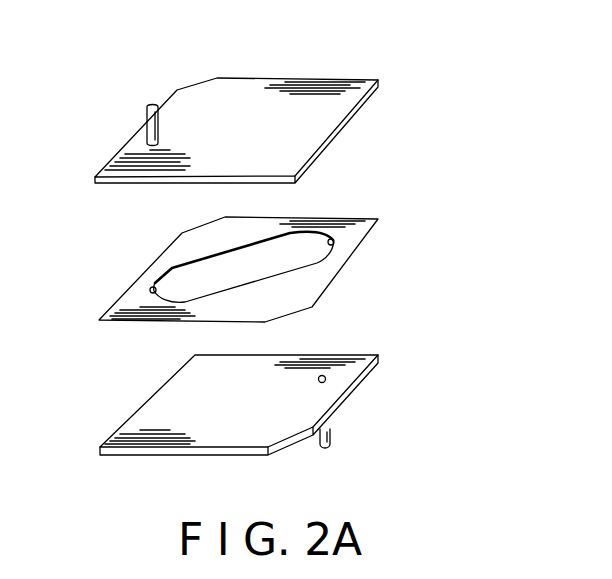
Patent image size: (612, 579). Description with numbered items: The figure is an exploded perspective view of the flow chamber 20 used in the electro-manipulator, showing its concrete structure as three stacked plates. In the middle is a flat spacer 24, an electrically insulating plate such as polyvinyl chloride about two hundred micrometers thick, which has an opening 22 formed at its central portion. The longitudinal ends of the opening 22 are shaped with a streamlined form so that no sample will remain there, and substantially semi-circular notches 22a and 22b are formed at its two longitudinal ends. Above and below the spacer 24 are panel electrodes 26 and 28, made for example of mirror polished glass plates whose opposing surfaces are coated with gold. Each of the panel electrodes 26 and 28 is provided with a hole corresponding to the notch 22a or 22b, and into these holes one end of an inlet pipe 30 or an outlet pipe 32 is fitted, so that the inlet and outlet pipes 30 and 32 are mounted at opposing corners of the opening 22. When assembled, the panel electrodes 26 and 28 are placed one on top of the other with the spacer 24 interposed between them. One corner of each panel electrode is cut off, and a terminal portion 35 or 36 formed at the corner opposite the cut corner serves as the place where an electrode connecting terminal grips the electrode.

The flow chamber 20 is at (349, 62).
The panel electrode 26 is at (362, 105).
The terminal portion 35 is at (291, 168).
The inlet pipe 30 is at (147, 117).
The flat spacer 24 is at (355, 252).
The opening 22 is at (180, 273).
The notch 22a is at (150, 288).
The notch 22b is at (333, 236).
The panel electrode 28 is at (380, 355).
The terminal portion 36 is at (200, 362).
The outlet pipe 32 is at (330, 372).